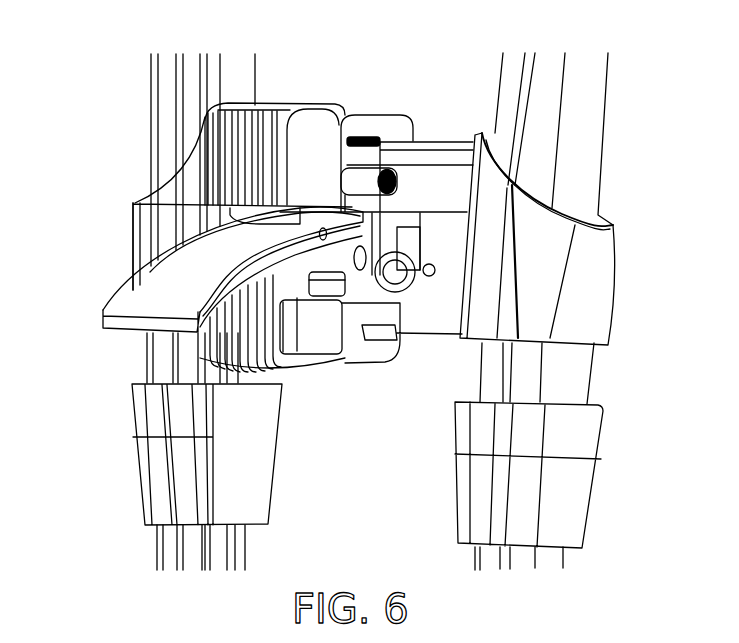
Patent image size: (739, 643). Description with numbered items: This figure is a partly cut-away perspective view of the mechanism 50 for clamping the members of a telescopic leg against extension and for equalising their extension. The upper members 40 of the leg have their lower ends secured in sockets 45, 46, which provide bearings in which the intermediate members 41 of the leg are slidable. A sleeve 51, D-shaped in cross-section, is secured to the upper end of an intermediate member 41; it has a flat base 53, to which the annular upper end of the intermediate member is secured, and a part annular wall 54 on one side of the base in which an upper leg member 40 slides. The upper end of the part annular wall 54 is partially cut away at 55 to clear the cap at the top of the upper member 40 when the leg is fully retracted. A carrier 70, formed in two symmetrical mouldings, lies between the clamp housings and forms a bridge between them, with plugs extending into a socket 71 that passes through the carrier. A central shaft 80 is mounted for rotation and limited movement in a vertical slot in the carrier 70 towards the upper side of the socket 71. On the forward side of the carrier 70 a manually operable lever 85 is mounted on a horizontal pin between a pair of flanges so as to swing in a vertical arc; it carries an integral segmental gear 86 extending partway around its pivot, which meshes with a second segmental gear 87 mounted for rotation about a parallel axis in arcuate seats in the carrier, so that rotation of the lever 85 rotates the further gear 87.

The upper leg member 40 is at (606, 117).
The intermediate member 41 is at (157, 546).
The socket 45 is at (135, 460).
The socket 46 is at (455, 483).
The mechanism 50 is at (391, 69).
The sleeve 51 is at (117, 131).
The flat base 53 is at (204, 128).
The part annular wall 54 is at (133, 237).
The cut away 55 is at (180, 164).
The carrier 70 is at (380, 112).
The socket 71 is at (387, 137).
The central shaft 80 is at (345, 184).
The manually operable lever 85 is at (113, 302).
The segmental gear 86 is at (297, 365).
The second segmental gear 87 is at (397, 348).